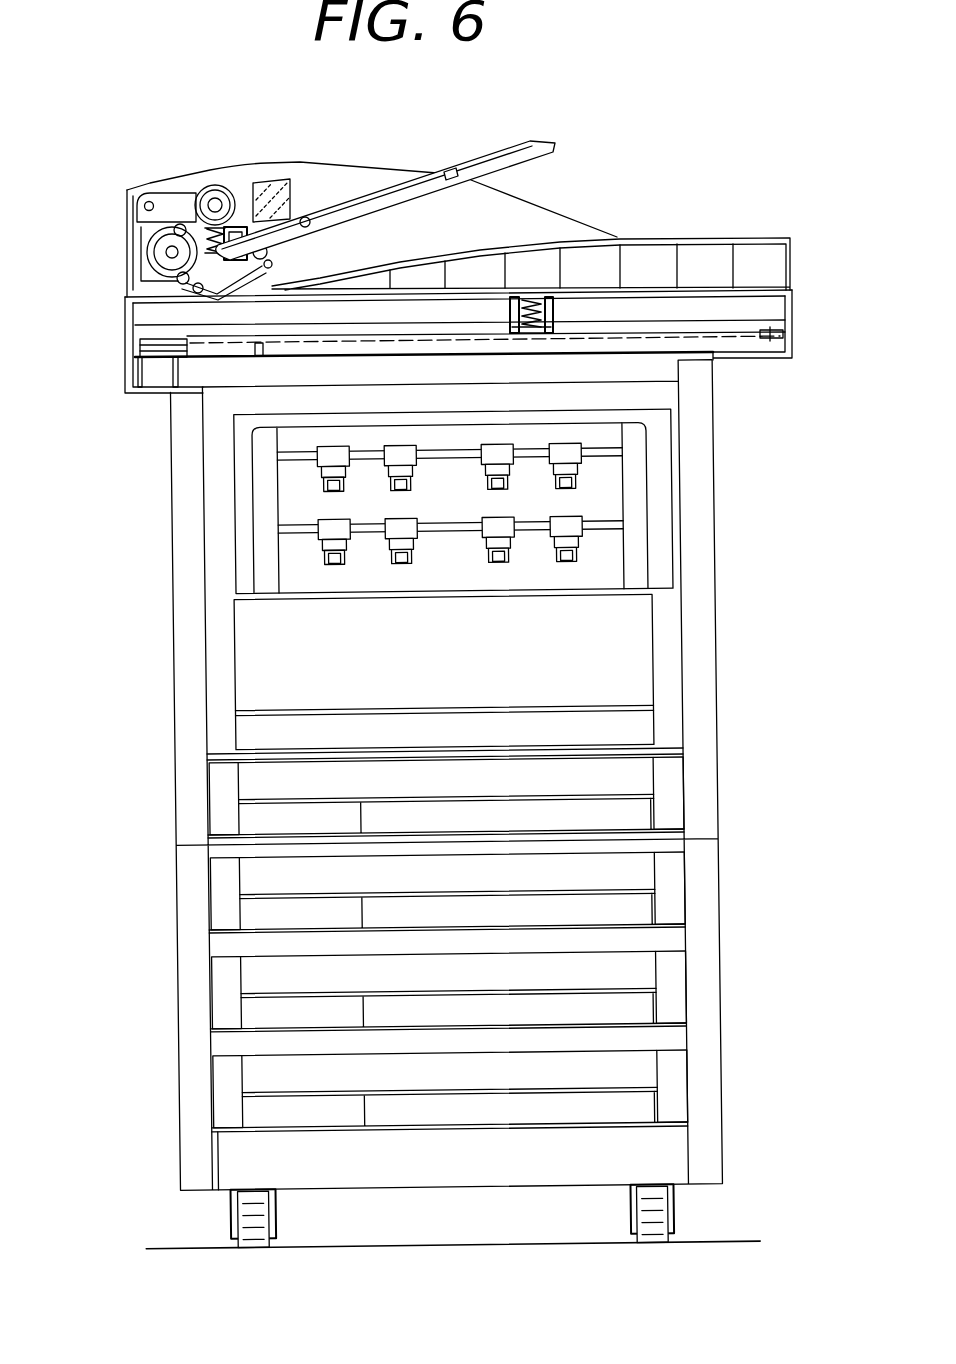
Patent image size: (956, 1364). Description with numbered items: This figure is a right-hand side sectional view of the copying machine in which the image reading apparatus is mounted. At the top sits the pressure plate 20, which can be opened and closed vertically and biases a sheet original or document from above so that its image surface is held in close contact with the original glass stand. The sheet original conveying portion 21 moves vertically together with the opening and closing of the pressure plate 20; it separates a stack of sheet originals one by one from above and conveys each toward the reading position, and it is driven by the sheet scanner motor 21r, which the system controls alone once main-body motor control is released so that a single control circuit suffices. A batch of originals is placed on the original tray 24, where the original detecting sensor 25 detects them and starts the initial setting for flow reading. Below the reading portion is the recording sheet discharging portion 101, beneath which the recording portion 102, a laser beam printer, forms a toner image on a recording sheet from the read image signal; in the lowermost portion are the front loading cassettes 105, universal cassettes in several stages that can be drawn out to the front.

The pressure plate 20 is at (583, 233).
The sheet original conveying portion 21 is at (188, 132).
The sheet scanner motor 21r is at (153, 252).
The original tray 24 is at (337, 204).
The original detecting sensor 25 is at (452, 170).
The recording sheet discharging portion 101 is at (604, 502).
The recording portion 102 is at (608, 657).
The front loading cassettes 105 is at (735, 1127).